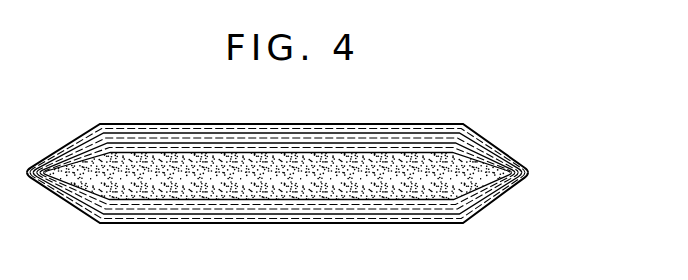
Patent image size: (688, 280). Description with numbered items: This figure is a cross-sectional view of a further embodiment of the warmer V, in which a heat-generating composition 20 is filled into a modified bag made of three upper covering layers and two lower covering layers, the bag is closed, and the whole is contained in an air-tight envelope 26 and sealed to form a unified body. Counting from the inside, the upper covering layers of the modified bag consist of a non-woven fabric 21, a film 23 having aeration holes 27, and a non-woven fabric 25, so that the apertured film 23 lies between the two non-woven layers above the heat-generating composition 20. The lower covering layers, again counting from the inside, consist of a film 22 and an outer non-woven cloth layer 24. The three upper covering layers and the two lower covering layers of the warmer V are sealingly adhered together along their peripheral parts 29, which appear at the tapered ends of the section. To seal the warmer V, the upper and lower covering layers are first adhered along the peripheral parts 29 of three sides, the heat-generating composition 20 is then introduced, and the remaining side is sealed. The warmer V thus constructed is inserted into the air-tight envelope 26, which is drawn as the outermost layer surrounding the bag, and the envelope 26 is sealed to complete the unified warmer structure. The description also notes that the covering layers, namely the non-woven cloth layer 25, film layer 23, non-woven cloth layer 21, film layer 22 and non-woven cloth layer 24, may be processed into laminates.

The warmer V is at (79, 133).
The heat-generating composition 20 is at (517, 190).
The non-woven fabric 21 is at (401, 150).
The film 22 is at (477, 213).
The film having aeration holes 23 is at (287, 129).
The non-woven cloth layer 24 is at (432, 211).
The non-woven fabric 25 is at (232, 131).
The air-tight envelope 26 is at (371, 126).
The aeration holes 27 is at (443, 143).
The peripheral parts 29 is at (530, 172).